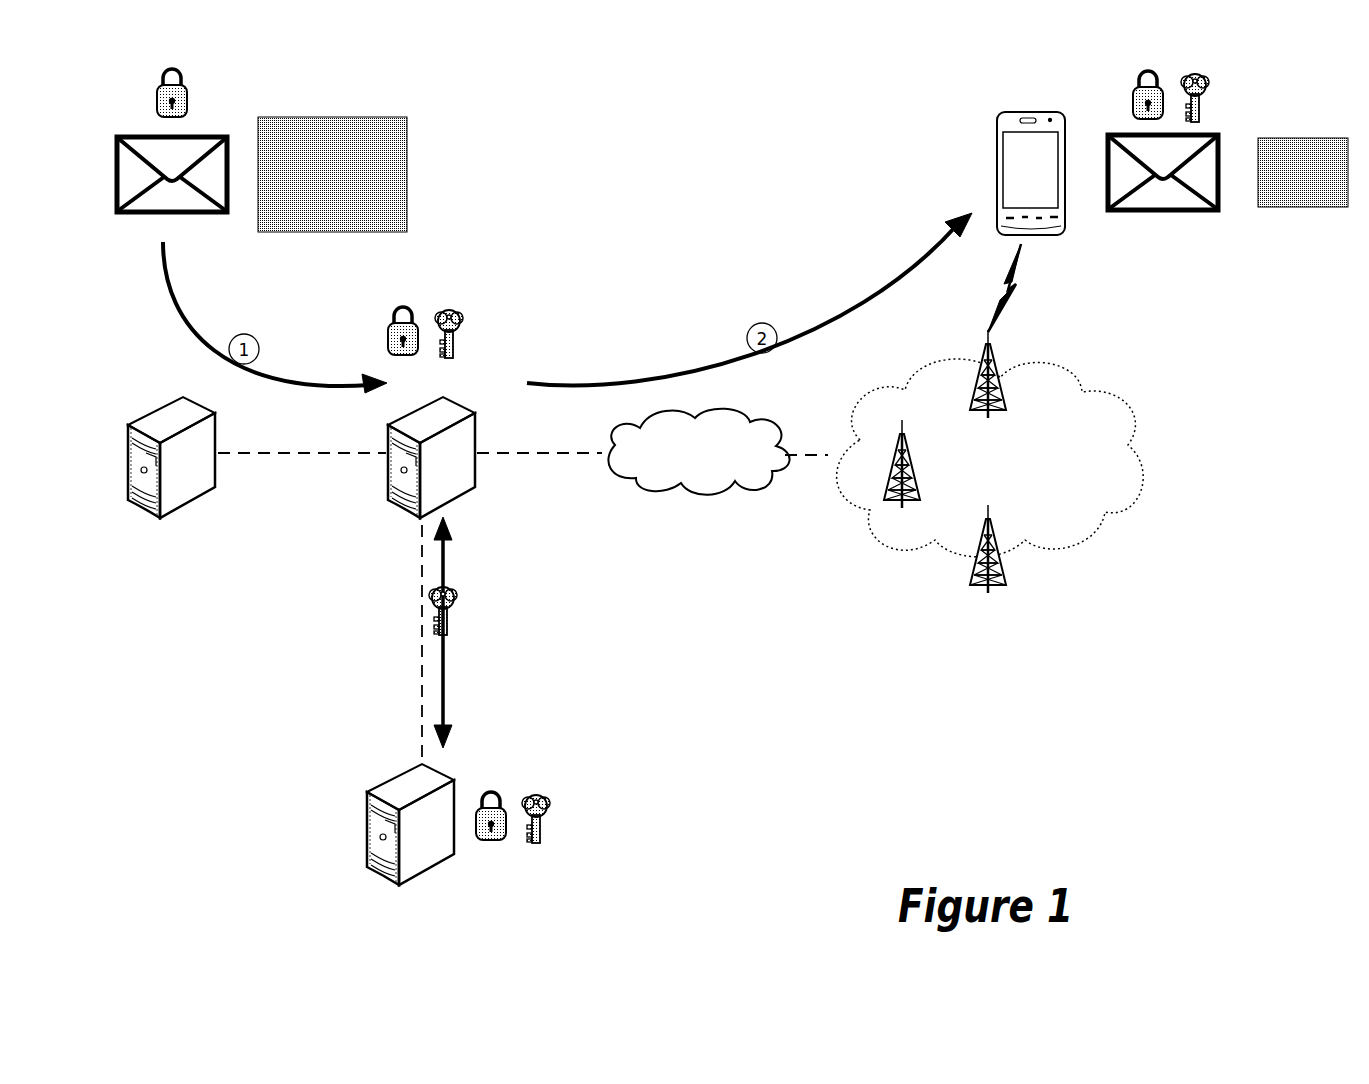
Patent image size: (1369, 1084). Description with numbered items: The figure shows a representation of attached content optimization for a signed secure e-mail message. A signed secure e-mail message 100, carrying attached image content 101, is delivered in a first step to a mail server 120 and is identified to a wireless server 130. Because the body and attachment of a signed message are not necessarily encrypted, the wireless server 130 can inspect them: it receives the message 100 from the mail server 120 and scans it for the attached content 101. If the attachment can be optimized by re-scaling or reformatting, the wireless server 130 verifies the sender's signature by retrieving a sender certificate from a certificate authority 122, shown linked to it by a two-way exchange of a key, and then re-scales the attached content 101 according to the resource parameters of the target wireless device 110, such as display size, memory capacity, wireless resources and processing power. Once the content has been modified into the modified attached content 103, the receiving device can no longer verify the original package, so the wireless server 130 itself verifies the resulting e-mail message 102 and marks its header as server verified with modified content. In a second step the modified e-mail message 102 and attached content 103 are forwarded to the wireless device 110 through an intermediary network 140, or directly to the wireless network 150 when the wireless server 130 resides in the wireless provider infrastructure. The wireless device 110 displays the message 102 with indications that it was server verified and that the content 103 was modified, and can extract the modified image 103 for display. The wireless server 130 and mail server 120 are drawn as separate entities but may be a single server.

The signed secure e-mail message 100 is at (120, 168).
The attached image content 101 is at (405, 185).
The modified e-mail message 102 is at (1222, 168).
The modified attached content 103 is at (1290, 140).
The wireless device 110 is at (995, 172).
The mail server 120 is at (143, 415).
The certificate authority 122 is at (367, 797).
The wireless server 130 is at (440, 395).
The intermediary network 140 is at (608, 450).
The wireless network 150 is at (1083, 378).